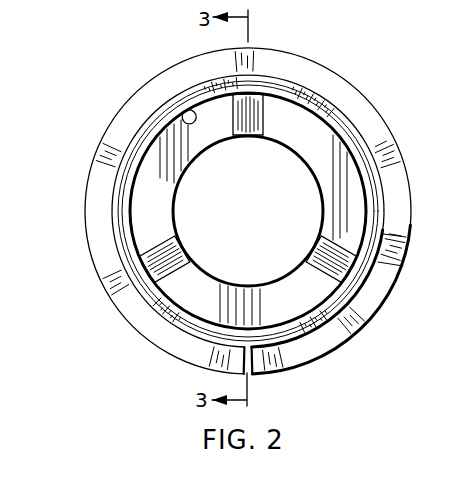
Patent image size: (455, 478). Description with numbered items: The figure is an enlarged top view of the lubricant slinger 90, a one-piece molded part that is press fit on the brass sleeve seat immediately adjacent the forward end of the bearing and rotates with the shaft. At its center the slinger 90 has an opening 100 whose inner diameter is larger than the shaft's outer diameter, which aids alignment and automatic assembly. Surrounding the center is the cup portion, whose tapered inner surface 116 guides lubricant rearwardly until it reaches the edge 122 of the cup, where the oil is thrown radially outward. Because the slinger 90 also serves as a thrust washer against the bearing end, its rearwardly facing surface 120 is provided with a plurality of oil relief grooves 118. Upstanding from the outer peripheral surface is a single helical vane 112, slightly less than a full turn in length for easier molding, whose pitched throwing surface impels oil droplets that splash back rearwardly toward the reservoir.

The lubricant slinger 90 is at (320, 45).
The opening 100 is at (270, 203).
The helical vane 112 is at (347, 313).
The tapered inner surface 116 is at (183, 119).
The oil relief grooves 118 is at (258, 124).
The rearwardly facing surface 120 is at (323, 157).
The edge 122 is at (380, 258).